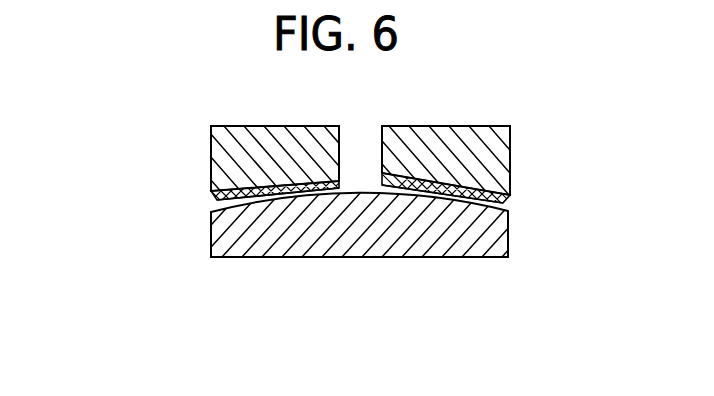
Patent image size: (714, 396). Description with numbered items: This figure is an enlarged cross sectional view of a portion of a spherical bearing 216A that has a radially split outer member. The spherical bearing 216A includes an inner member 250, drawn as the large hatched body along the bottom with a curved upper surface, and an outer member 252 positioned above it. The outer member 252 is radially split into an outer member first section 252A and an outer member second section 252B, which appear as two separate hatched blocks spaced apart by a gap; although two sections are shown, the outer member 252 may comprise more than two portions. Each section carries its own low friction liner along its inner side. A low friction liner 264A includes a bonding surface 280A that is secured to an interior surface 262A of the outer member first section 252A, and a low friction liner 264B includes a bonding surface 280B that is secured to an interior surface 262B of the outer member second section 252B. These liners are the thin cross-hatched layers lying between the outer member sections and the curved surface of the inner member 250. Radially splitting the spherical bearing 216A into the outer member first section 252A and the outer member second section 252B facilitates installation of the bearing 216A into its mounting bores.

The spherical bearing 216A is at (172, 101).
The inner member 250 is at (508, 242).
The outer member 252 is at (366, 124).
The outer member first section 252A is at (502, 141).
The outer member second section 252B is at (218, 168).
The interior surface 262A is at (434, 182).
The interior surface 262B is at (289, 183).
The low friction liner 264A is at (508, 202).
The low friction liner 264B is at (218, 197).
The bonding surface 280A is at (462, 184).
The bonding surface 280B is at (327, 180).